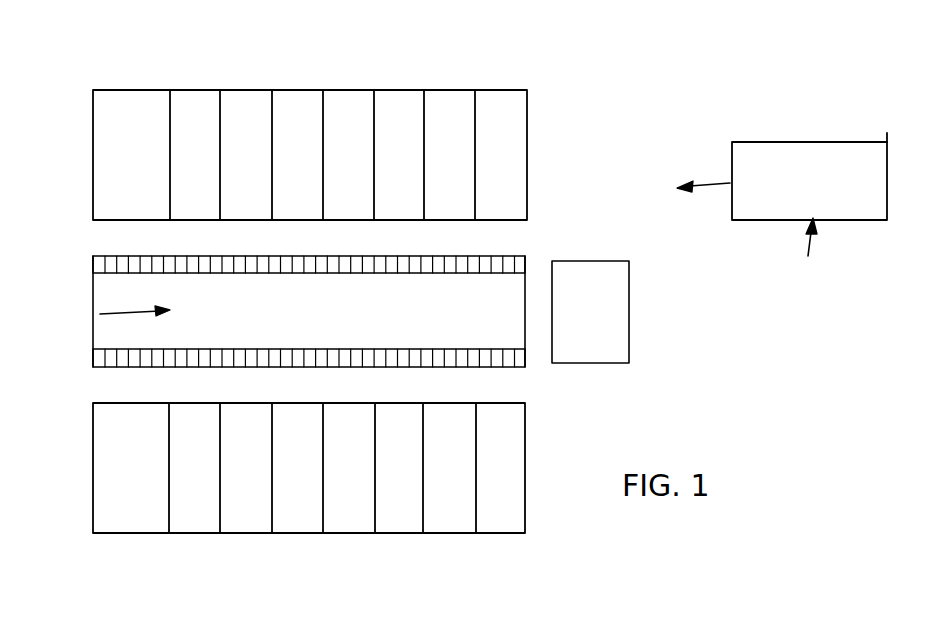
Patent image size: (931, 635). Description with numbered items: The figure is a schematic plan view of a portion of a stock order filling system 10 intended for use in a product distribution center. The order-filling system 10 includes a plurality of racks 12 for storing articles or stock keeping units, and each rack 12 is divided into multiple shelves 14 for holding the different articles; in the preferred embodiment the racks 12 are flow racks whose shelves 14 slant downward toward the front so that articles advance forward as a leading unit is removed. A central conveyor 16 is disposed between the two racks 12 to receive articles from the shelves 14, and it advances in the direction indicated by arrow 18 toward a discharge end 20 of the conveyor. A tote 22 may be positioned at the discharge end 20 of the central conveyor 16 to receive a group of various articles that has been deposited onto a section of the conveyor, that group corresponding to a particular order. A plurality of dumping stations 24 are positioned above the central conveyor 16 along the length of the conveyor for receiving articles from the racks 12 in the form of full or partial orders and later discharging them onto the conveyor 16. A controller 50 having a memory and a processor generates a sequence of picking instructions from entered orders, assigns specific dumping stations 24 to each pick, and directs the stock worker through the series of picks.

The order filling system 10 is at (610, 183).
The rack 12 is at (528, 111).
The shelf 14 is at (490, 103).
The central conveyor 16 is at (468, 280).
The arrow 18 is at (130, 313).
The discharge end 20 is at (525, 318).
The tote 22 is at (616, 303).
The dumping station 24 is at (120, 257).
The controller 50 is at (807, 152).